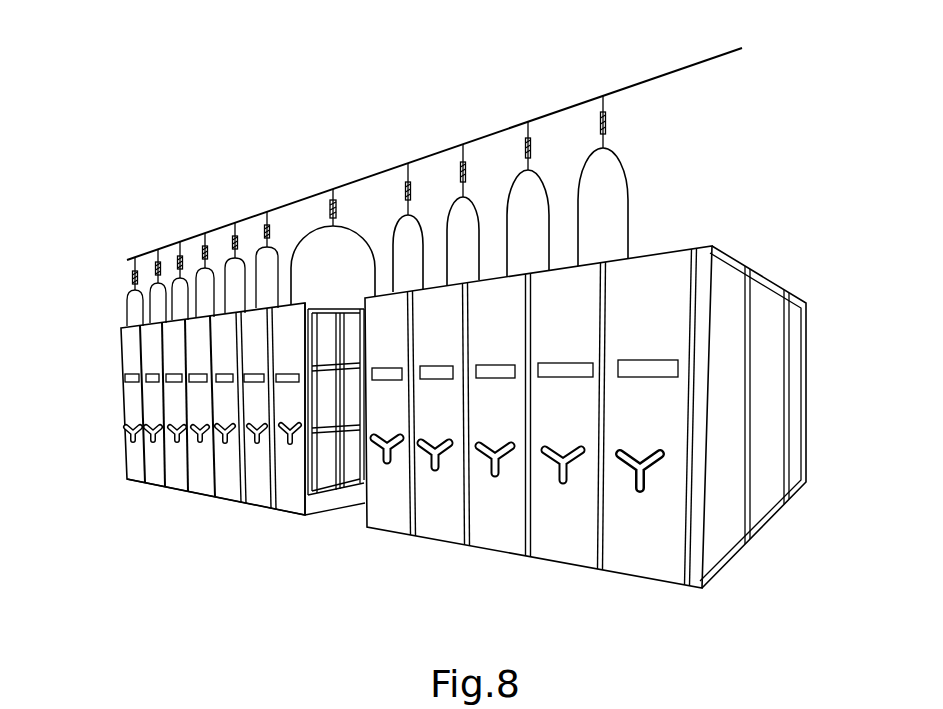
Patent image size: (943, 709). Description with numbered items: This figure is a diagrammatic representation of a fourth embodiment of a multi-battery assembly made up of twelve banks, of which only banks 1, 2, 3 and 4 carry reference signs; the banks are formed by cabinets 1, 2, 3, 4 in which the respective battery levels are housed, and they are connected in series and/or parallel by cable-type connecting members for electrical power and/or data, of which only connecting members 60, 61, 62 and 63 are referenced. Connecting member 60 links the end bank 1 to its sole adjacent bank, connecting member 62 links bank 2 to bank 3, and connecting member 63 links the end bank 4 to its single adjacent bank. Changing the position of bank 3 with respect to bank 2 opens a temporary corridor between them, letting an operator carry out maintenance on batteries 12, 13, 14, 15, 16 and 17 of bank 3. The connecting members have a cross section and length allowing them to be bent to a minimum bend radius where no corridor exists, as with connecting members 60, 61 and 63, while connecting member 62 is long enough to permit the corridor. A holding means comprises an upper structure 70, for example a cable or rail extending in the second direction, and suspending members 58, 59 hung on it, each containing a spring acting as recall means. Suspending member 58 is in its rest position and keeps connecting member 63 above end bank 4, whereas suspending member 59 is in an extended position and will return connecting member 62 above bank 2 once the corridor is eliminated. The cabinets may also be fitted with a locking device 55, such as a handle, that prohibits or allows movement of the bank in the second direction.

The end bank 1 is at (640, 545).
The bank 2 is at (390, 513).
The bank 3 is at (290, 485).
The end bank 4 is at (133, 463).
The battery 12 is at (327, 470).
The battery 13 is at (360, 487).
The battery 14 is at (330, 470).
The battery 15 is at (347, 493).
The battery 16 is at (330, 325).
The battery 17 is at (348, 330).
The locking device 55 is at (660, 472).
The suspending member 58 is at (138, 263).
The suspending member 59 is at (333, 207).
The connecting member 60 is at (585, 173).
The connecting member 61 is at (391, 227).
The connecting member 62 is at (305, 242).
The connecting member 63 is at (123, 306).
The upper structure 70 is at (695, 63).